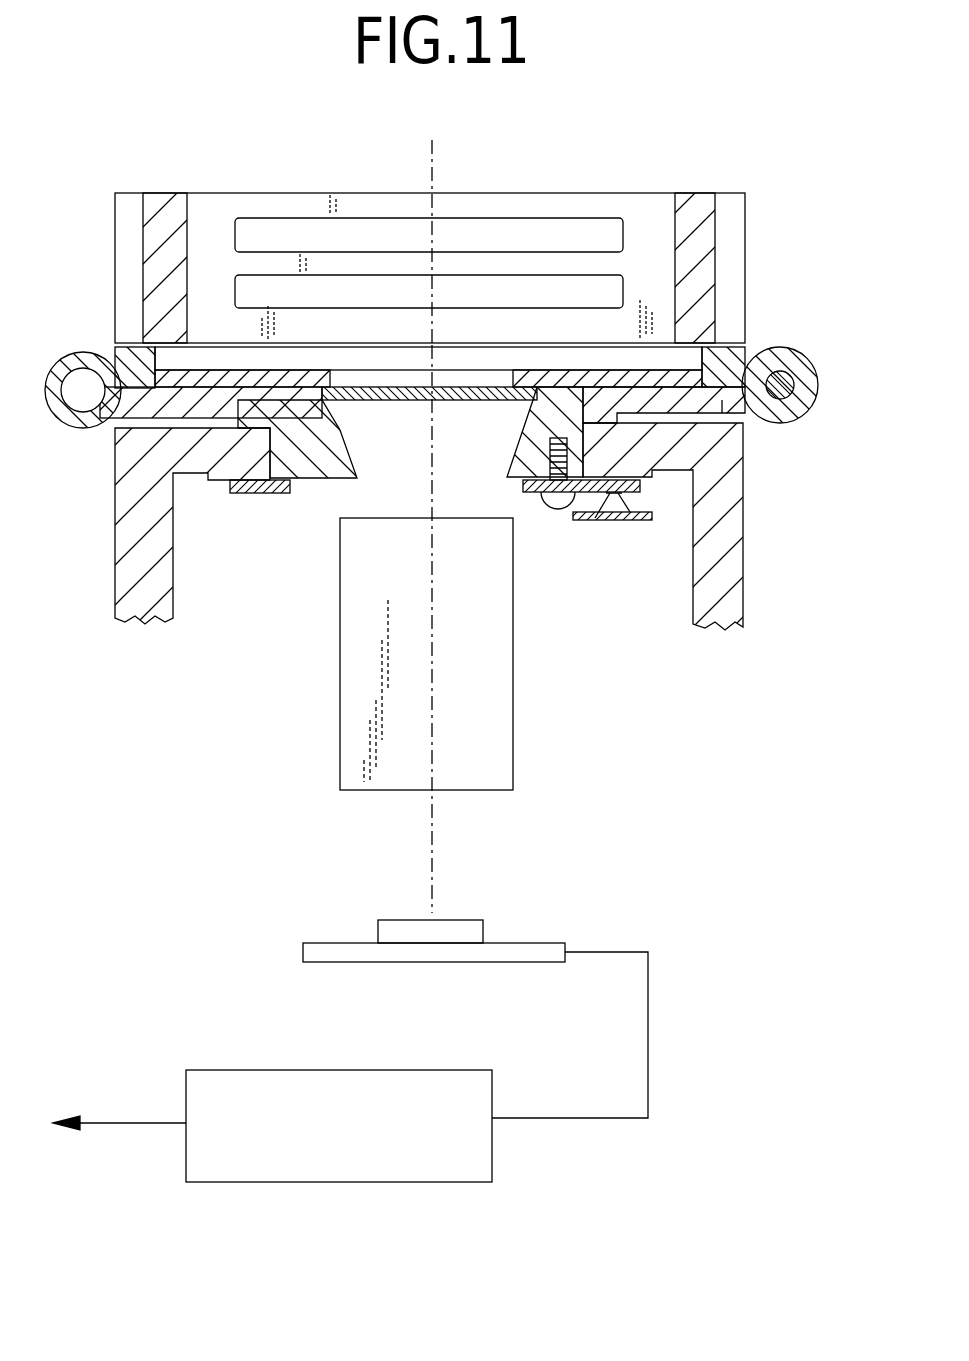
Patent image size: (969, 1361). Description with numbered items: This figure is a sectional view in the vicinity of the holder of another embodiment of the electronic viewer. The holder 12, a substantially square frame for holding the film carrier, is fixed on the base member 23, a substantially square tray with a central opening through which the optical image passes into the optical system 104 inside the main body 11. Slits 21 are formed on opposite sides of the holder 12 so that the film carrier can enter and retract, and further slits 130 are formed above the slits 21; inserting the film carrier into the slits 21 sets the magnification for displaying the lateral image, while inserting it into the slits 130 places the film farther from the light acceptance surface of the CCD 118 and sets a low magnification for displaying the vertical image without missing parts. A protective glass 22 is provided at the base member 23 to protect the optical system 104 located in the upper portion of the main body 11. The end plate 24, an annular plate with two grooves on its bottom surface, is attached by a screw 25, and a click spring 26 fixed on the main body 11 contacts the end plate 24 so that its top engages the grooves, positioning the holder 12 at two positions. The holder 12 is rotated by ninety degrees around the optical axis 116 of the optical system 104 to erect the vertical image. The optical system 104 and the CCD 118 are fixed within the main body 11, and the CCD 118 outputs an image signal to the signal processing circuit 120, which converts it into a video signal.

The main body 11 is at (743, 566).
The holder 12 is at (745, 227).
The slit 21 is at (453, 288).
The protective glass 22 is at (410, 402).
The base member 23 is at (723, 423).
The end plate 24 is at (243, 495).
The screw 25 is at (553, 505).
The click spring 26 is at (652, 516).
The optical system 104 is at (495, 666).
The optical axis 116 is at (433, 855).
The CCD 118 is at (483, 935).
The signal processing circuit 120 is at (363, 1070).
The slit 130 is at (537, 230).